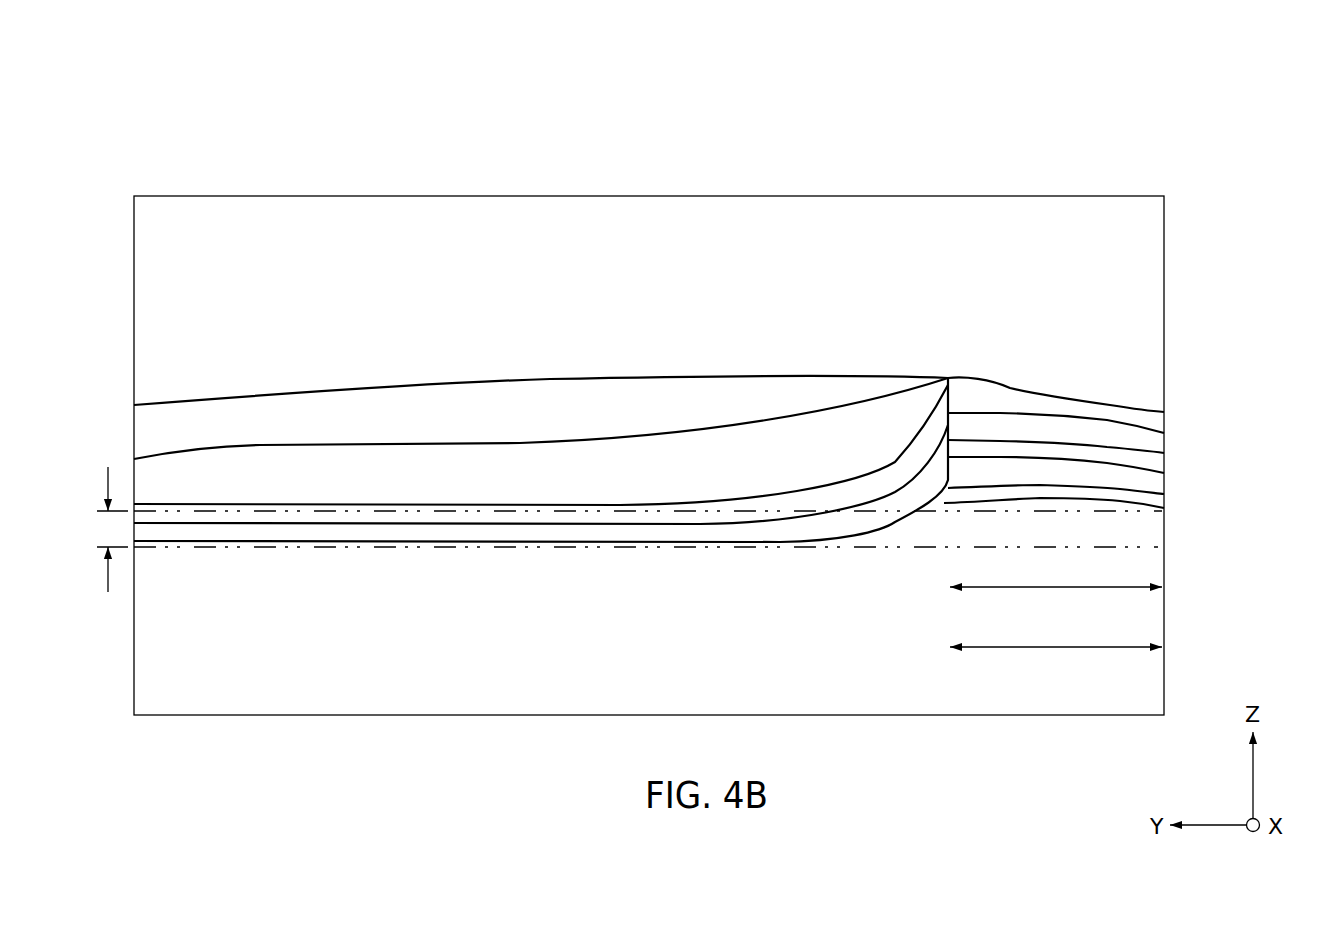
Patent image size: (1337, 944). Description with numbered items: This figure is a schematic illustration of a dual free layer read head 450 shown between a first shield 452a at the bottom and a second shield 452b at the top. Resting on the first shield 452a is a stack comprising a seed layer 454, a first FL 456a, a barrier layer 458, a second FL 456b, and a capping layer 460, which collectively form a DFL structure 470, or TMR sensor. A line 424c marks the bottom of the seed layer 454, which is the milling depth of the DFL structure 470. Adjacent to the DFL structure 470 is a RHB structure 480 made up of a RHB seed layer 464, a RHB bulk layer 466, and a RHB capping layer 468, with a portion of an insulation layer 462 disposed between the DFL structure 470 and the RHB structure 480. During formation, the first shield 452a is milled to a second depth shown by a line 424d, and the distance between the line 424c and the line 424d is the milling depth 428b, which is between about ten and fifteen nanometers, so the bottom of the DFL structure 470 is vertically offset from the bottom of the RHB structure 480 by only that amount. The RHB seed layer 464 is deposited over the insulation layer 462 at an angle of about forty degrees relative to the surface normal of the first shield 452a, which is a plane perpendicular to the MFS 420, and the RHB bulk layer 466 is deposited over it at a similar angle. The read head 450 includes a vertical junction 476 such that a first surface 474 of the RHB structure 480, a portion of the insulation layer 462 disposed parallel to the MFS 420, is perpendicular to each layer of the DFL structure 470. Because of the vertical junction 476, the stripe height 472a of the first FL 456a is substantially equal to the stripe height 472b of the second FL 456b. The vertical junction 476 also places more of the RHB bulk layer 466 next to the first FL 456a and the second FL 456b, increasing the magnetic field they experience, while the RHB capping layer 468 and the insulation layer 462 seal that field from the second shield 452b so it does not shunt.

The DFL read head 450 is at (193, 108).
The MFS 420 is at (1262, 467).
The RHB structure 480 is at (465, 368).
The RHB capping layer 468 is at (588, 420).
The RHB bulk layer 466 is at (670, 473).
The RHB seed layer 464 is at (815, 498).
The insulation layer 462 is at (912, 497).
The vertical junction 476 is at (963, 398).
The first surface 474 is at (948, 463).
The DFL structure 470 is at (1087, 398).
The capping layer 460 is at (1165, 423).
The second FL 456b is at (1165, 447).
The barrier layer 458 is at (1165, 462).
The first FL 456a is at (1165, 484).
The seed layer 454 is at (1165, 503).
The line 424c is at (1105, 513).
The line 424d is at (203, 550).
The milling depth 428b is at (85, 529).
The stripe height 472a is at (1056, 573).
The stripe height 472b is at (1056, 634).
The second shield 452b is at (772, 304).
The first shield 452a is at (765, 657).